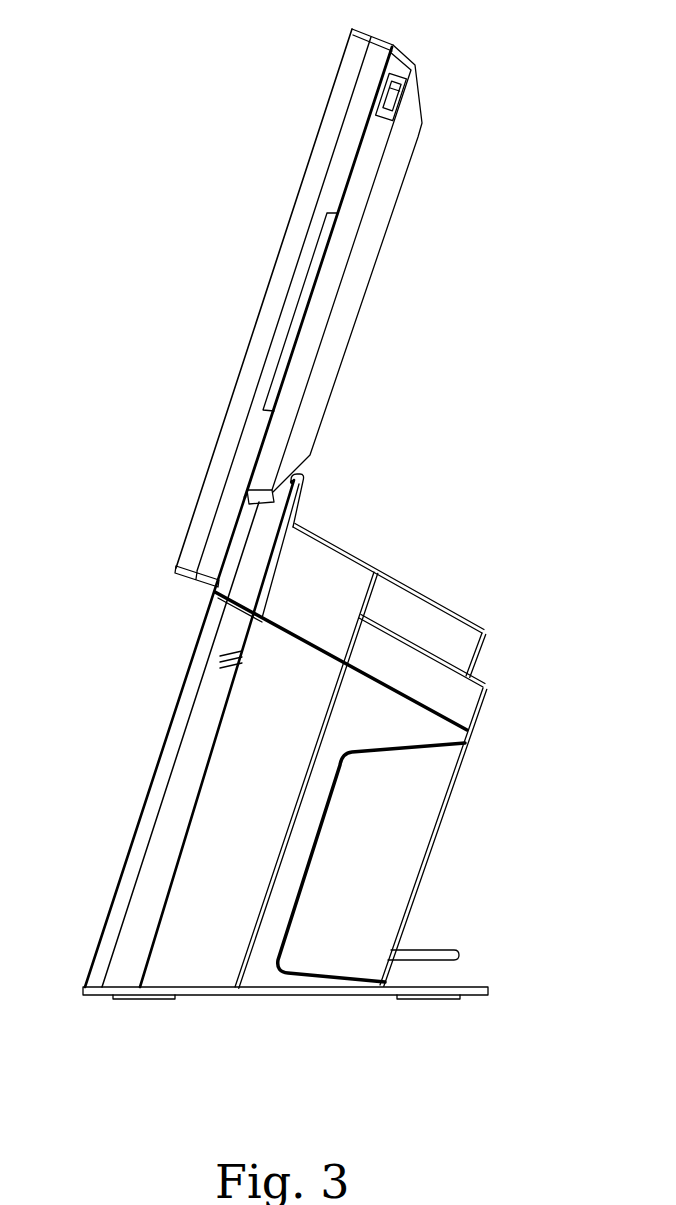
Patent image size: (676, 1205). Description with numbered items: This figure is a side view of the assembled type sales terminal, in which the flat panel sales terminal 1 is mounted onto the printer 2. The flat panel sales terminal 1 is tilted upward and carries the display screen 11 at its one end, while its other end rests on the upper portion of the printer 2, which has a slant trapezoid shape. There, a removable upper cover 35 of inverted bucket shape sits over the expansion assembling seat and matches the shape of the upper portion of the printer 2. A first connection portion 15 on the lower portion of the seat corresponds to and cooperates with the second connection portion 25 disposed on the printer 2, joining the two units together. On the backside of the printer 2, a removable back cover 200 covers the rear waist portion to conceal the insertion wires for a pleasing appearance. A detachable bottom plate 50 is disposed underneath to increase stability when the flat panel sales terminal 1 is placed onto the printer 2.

The flat panel sales terminal 1 is at (392, 176).
The display screen 11 is at (288, 214).
The printer 2 is at (133, 947).
The removable upper cover 35 is at (315, 568).
The first connection portion 15 is at (477, 787).
The second connection portion 25 is at (366, 787).
The removable back cover 200 is at (383, 907).
The bottom plate 50 is at (480, 992).